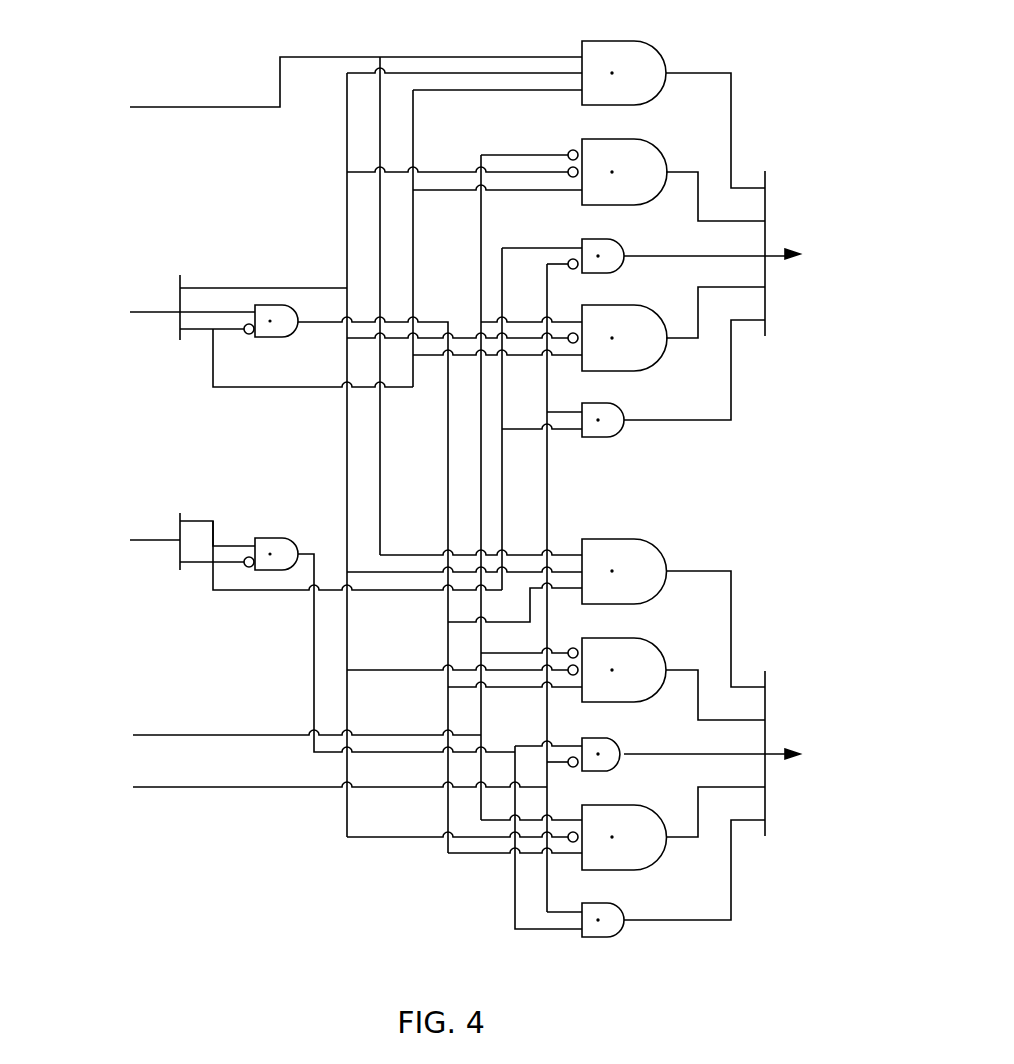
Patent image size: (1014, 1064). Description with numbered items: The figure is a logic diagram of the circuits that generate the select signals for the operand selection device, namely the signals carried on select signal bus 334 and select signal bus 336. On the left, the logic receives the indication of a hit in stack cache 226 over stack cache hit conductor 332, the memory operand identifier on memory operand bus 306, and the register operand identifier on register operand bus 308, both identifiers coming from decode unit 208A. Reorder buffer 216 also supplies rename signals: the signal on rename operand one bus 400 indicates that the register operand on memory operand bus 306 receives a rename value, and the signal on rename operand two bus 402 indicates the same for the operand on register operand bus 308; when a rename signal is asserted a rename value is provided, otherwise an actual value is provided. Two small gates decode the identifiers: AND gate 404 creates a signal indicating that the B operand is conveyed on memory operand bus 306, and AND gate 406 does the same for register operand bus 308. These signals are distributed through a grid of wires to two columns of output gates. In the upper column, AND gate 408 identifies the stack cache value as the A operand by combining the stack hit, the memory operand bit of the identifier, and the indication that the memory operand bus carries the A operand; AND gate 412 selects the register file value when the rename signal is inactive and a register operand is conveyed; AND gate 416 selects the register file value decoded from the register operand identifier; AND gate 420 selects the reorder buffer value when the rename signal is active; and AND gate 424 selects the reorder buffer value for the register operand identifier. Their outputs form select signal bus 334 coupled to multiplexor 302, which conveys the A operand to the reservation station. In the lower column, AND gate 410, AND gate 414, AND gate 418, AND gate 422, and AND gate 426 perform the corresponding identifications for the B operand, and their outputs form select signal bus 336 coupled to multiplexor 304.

The stack cache 226 is at (85, 98).
The stack cache hit conductor 332 is at (265, 105).
The memory operand bus 306 is at (148, 302).
The decode unit 208A is at (77, 506).
The AND gate 404 is at (280, 338).
The register operand bus 308 is at (147, 538).
The AND gate 406 is at (280, 535).
The reorder buffer 216 is at (95, 771).
The rename operand one bus 400 is at (303, 733).
The rename operand two bus 402 is at (305, 790).
The AND gate 408 is at (632, 38).
The AND gate 412 is at (632, 137).
The AND gate 416 is at (607, 238).
The AND gate 420 is at (632, 304).
The AND gate 424 is at (607, 403).
The select signal bus 334 is at (777, 242).
The multiplexor 302 is at (838, 288).
The AND gate 410 is at (632, 538).
The AND gate 414 is at (632, 637).
The AND gate 418 is at (607, 738).
The AND gate 422 is at (632, 804).
The AND gate 426 is at (607, 903).
The select signal bus 336 is at (777, 742).
The multiplexor 304 is at (838, 786).